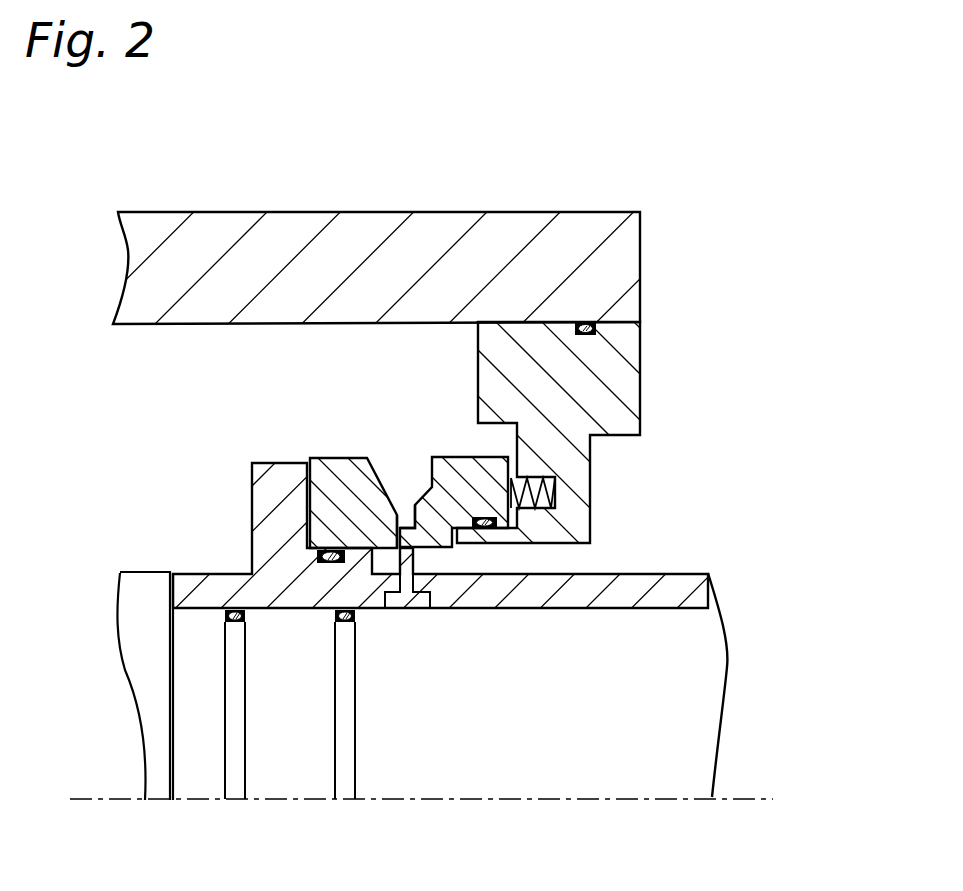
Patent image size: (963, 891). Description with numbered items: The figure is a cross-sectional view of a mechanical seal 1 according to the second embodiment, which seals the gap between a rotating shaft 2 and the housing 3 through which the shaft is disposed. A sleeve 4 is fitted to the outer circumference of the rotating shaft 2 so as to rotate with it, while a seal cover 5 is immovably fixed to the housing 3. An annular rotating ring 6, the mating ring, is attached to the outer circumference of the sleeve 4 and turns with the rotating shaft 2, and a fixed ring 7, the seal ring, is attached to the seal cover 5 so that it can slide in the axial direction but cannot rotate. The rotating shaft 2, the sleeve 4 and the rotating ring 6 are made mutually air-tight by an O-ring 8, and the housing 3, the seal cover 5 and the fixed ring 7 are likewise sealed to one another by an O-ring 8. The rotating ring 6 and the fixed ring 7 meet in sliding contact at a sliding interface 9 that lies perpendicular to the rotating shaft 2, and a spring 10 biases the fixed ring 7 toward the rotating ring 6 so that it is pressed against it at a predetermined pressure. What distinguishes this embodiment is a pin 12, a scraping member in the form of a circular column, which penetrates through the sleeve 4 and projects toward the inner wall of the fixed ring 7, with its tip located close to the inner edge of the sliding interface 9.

The mechanical seal 1 is at (481, 425).
The rotating shaft 2 is at (715, 713).
The housing 3 is at (278, 218).
The sleeve 4 is at (713, 581).
The seal cover 5 is at (640, 385).
The rotating ring 6 is at (319, 452).
The fixed ring 7 is at (458, 452).
The O-ring 8 is at (585, 322).
The sliding interface 9 is at (408, 524).
The spring 10 is at (562, 500).
The pin 12 is at (413, 565).